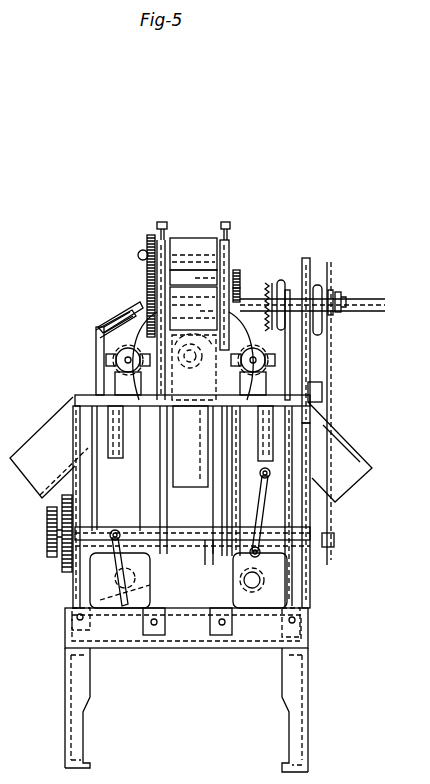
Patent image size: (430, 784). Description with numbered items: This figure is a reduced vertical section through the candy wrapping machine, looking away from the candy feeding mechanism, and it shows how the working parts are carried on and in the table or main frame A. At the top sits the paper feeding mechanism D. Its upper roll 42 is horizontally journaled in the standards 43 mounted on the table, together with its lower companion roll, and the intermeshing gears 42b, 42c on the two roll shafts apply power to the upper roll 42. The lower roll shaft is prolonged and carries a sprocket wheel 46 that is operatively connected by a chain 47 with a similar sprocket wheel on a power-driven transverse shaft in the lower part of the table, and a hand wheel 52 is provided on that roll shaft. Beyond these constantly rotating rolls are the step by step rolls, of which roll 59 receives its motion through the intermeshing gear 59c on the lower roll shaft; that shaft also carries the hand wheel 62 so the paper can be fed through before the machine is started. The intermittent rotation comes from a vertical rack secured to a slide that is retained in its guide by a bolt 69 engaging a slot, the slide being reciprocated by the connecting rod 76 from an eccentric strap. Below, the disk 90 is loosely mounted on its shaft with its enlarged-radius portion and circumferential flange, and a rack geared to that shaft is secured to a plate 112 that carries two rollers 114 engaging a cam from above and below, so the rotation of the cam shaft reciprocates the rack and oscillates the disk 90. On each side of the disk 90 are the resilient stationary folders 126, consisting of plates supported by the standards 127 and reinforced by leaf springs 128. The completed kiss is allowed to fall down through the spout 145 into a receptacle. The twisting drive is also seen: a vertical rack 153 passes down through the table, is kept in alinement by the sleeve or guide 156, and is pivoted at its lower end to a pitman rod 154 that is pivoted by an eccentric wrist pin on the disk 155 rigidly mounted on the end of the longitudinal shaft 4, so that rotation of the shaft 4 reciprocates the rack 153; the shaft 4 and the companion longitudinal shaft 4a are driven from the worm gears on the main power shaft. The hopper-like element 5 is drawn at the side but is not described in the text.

The longitudinal shaft 4 is at (110, 585).
The longitudinal shaft 4a is at (255, 580).
The hopper wing 5 is at (14, 456).
The upper roll 42 is at (200, 253).
The gear 42b is at (243, 298).
The gear 42c is at (243, 276).
The standard 43 is at (230, 264).
The sprocket wheel 46 is at (338, 302).
The chain 47 is at (331, 353).
The hand wheel 52 is at (286, 295).
The step by step roll 59 is at (142, 259).
The gear 59c is at (151, 294).
The hand wheel 62 is at (322, 295).
The bolt 69 is at (273, 476).
The connecting rod 76 is at (323, 389).
The disk 90 is at (204, 356).
The plate 112 is at (207, 498).
The roller 114 is at (212, 586).
The stationary folder 126 is at (124, 312).
The standard 127 is at (96, 356).
The leaf spring 128 is at (120, 322).
The spout 145 is at (370, 465).
The vertical rack 153 is at (117, 480).
The pitman rod 154 is at (261, 490).
The disk 155 is at (188, 580).
The sleeve or guide 156 is at (120, 455).
The table or main frame A is at (186, 628).
The paper feeding mechanism D is at (193, 275).